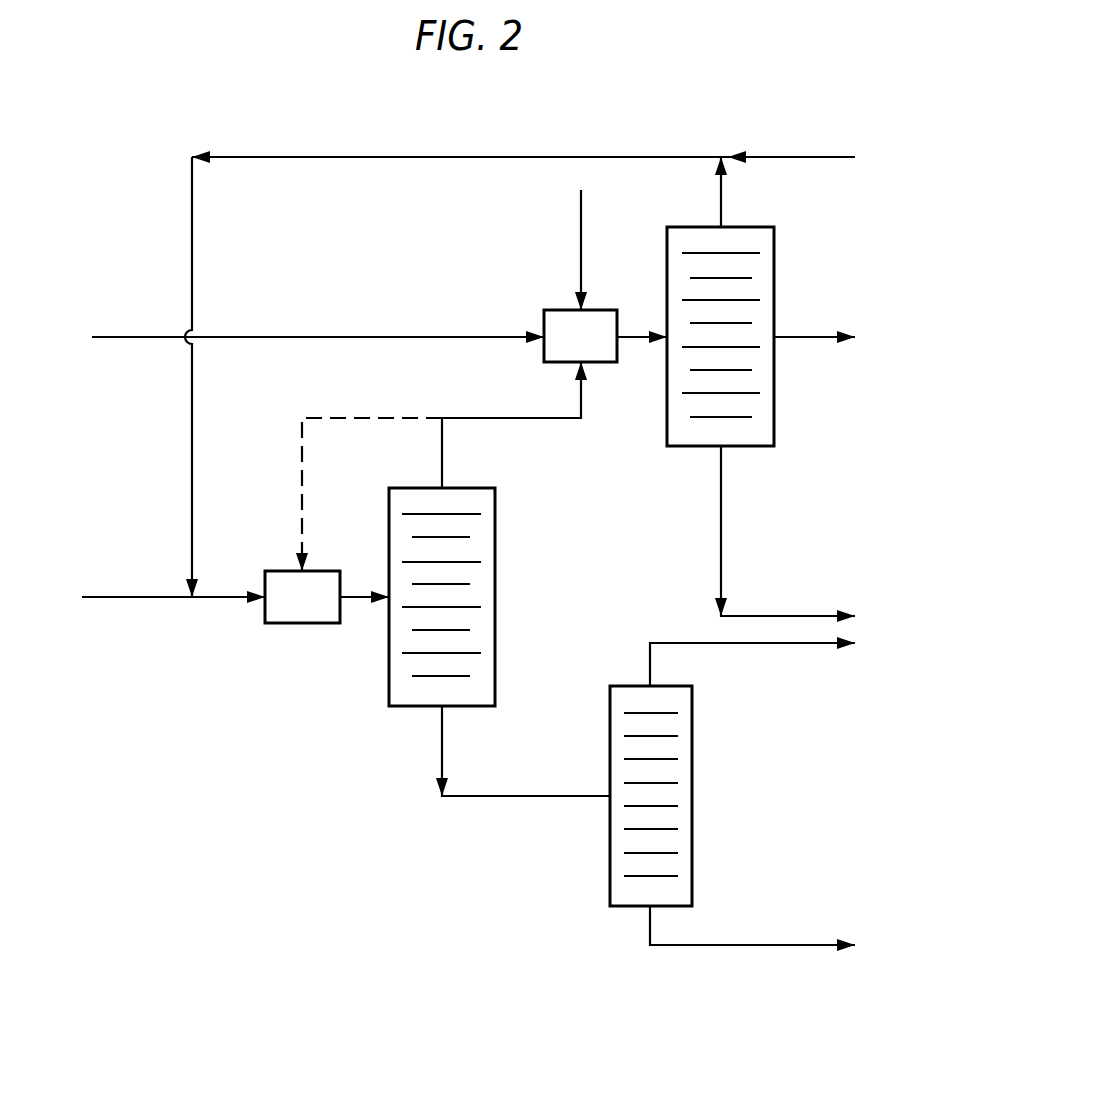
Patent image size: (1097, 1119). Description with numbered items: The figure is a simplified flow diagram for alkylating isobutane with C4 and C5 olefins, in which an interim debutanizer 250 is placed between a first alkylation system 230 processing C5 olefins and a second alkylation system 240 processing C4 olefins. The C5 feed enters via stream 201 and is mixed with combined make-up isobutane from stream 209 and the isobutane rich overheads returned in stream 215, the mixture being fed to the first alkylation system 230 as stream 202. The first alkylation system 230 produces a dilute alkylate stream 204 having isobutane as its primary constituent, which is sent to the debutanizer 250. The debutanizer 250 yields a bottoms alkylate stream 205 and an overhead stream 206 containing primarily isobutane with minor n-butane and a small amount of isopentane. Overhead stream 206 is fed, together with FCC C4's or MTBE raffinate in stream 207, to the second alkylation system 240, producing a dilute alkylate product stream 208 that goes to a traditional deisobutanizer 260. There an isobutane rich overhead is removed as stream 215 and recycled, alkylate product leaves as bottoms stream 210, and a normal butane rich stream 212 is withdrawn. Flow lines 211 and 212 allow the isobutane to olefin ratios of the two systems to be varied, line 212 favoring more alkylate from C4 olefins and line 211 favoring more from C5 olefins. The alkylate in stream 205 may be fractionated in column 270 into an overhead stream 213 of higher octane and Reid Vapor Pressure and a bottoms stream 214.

The C5 feed stream 201 is at (162, 597).
The combined feed stream 202 is at (192, 236).
The dilute alkylate stream 204 is at (358, 597).
The bottoms alkylate stream 205 is at (567, 796).
The overhead stream 206 is at (500, 418).
The C4 olefin feed stream 207 is at (128, 337).
The dilute alkylate product stream 208 is at (634, 338).
The make up isobutane stream 209 is at (787, 157).
The alkylate product bottoms stream 210 is at (800, 616).
The flow line 211 is at (302, 511).
The normal butane rich stream 212 is at (581, 216).
The overhead stream 213 is at (810, 643).
The bottoms stream 214 is at (738, 945).
The isobutane rich overhead stream 215 is at (721, 193).
The first alkylation system 230 is at (302, 597).
The second alkylation system 240 is at (580, 336).
The debutanizer 250 is at (495, 495).
The deisobutanizer 260 is at (698, 227).
The fractionation column 270 is at (625, 686).